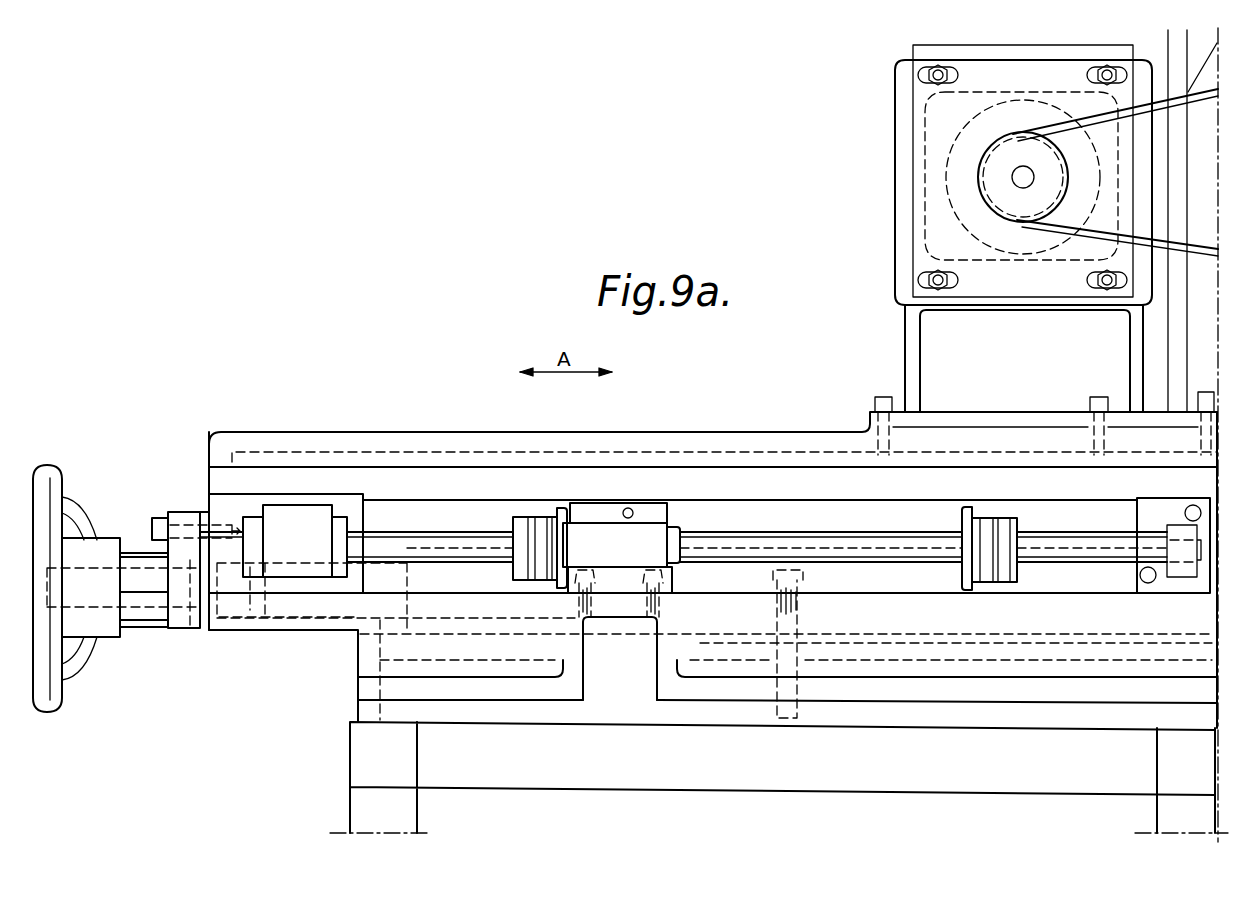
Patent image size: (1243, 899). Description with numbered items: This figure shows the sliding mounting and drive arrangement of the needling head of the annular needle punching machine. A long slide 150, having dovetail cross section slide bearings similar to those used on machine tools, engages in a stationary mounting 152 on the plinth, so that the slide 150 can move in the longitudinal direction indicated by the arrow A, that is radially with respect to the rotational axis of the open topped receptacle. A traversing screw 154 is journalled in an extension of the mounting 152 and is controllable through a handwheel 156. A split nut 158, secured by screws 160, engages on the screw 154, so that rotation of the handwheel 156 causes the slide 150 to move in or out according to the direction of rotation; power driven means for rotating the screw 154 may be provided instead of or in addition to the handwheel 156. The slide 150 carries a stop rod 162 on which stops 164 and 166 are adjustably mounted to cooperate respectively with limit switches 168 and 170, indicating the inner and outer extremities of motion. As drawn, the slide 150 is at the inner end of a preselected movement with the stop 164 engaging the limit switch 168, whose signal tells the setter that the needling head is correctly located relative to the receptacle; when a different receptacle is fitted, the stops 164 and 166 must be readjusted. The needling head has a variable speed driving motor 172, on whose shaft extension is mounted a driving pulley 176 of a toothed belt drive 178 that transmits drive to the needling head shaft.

The slide 150 is at (738, 432).
The stationary mounting 152 is at (382, 630).
The traversing screw 154 is at (808, 608).
The handwheel 156 is at (63, 490).
The split nut 158 is at (668, 606).
The screws 160 is at (562, 612).
The stop rod 162 is at (849, 534).
The stop 164 is at (560, 510).
The stop 166 is at (972, 510).
The limit switch 168 is at (600, 510).
The limit switch 170 is at (672, 530).
The variable speed driving motor 172 is at (912, 243).
The driving pulley 176 is at (980, 178).
The toothed belt drive 178 is at (1172, 93).